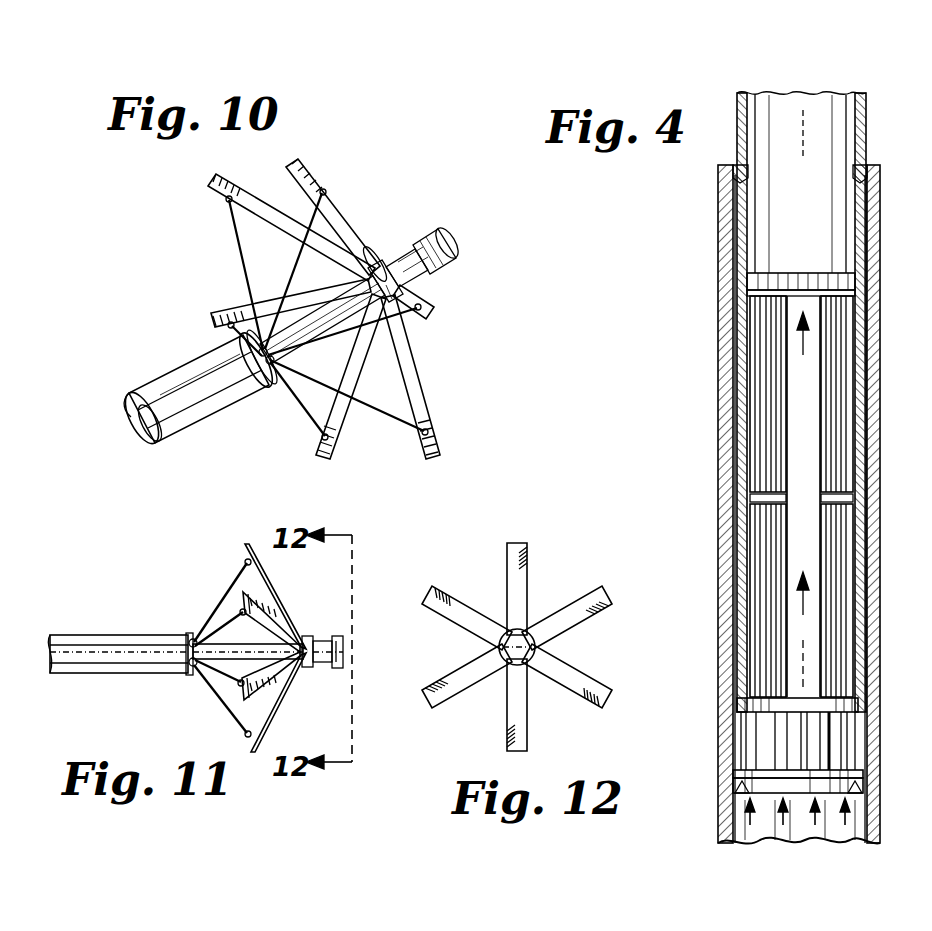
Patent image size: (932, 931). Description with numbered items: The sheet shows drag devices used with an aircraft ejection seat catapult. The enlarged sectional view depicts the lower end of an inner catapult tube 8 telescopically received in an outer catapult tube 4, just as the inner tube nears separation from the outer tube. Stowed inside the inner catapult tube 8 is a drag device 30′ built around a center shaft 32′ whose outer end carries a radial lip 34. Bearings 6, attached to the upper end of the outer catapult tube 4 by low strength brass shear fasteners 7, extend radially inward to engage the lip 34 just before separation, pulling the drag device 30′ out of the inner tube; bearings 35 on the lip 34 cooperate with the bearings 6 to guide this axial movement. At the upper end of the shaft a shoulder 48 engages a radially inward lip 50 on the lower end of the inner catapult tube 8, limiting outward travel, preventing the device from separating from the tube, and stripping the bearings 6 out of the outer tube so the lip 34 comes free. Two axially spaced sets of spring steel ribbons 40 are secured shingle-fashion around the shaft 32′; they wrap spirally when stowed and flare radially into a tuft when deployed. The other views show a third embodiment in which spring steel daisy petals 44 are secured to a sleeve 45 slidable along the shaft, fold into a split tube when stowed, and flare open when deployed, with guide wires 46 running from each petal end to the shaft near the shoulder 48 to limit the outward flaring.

In FIG. 4, the outer catapult tube 4 is at (880, 751).
In FIG. 4, the bearings 6 is at (748, 190).
In FIG. 4, the low strength shear fasteners 7 is at (712, 168).
In FIG. 4, the inner catapult tube 8 is at (737, 148).
In FIG. 4, the drag device 30′ is at (791, 507).
In FIG. 4, the center shaft 32′ is at (807, 456).
In FIG. 10, the radial lip 34 is at (440, 262).
In FIG. 11, the radial lip 34 is at (338, 670).
In FIG. 12, the radial lip 34 is at (532, 650).
In FIG. 4, the radial lip 34 is at (748, 758).
In FIG. 4, the bearings 35 is at (863, 788).
In FIG. 4, the spring steel ribbons 40 is at (835, 415).
In FIG. 10, the daisy petals 44 is at (232, 188).
In FIG. 11, the daisy petals 44 is at (262, 600).
In FIG. 12, the daisy petals 44 is at (507, 579).
In FIG. 10, the sleeve 45 is at (398, 252).
In FIG. 11, the sleeve 45 is at (305, 640).
In FIG. 10, the guide wire 46 is at (292, 410).
In FIG. 11, the guide wire 46 is at (215, 607).
In FIG. 4, the shoulder 48 is at (858, 302).
In FIG. 4, the lip 50 is at (748, 678).